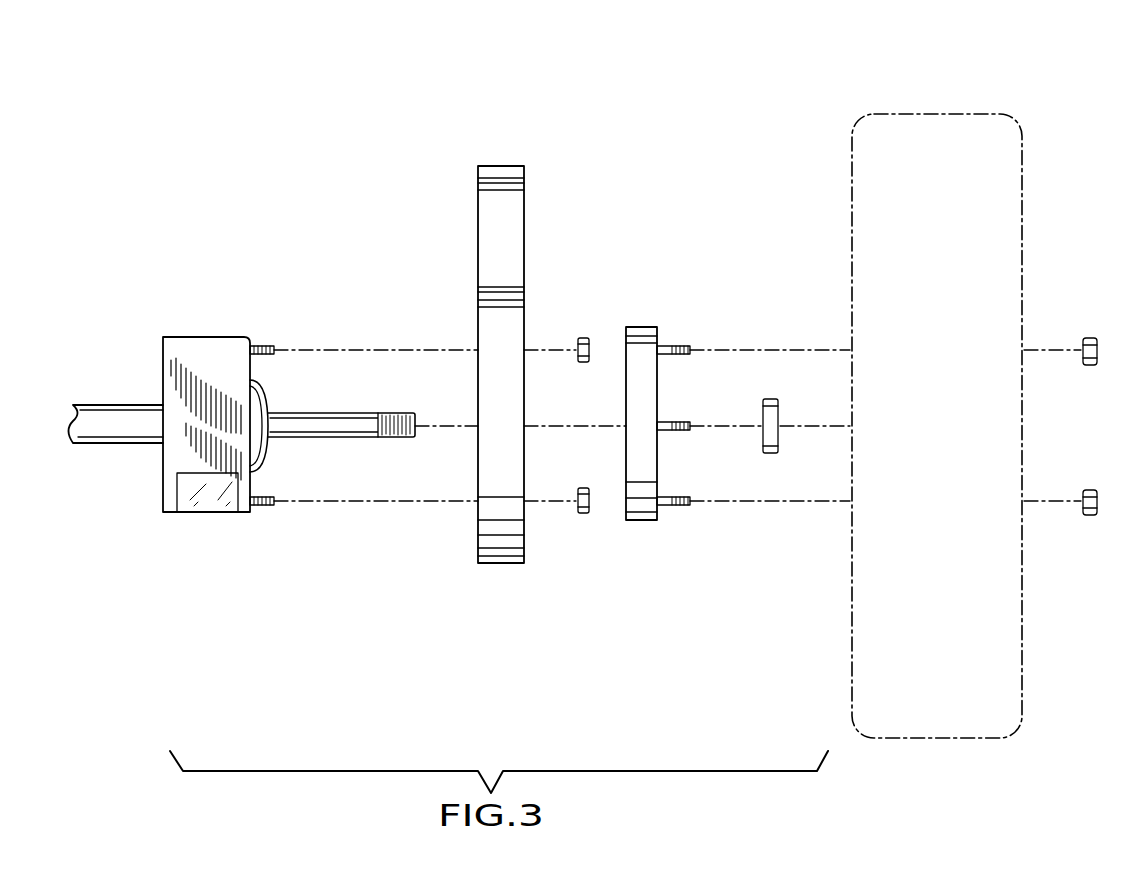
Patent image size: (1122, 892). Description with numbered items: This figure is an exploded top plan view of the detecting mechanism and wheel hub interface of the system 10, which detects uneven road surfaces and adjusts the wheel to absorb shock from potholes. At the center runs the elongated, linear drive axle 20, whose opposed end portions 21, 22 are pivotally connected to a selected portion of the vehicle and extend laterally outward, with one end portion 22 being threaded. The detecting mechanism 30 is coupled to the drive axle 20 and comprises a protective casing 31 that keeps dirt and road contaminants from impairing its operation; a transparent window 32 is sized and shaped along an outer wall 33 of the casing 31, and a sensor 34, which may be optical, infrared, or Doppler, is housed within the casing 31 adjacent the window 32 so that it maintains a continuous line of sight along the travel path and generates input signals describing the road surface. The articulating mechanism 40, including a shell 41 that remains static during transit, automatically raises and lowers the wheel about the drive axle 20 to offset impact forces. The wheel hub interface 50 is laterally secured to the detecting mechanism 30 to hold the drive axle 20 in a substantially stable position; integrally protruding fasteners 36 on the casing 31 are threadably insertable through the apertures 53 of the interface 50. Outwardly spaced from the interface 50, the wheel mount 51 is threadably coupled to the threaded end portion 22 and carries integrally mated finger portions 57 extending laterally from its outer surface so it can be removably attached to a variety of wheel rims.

The system 10 is at (618, 104).
The drive axle 20 is at (370, 437).
The end portion of drive axle 21 is at (100, 405).
The threaded end portion of drive axle 22 is at (395, 413).
The detecting mechanism 30 is at (181, 522).
The protective casing 31 is at (196, 337).
The transparent window 32 is at (223, 512).
The outer wall of casing 33 is at (182, 457).
The sensor 34 is at (213, 512).
The integrally protruding fasteners 36 is at (268, 346).
The articulating mechanism 40 is at (275, 393).
The shell 41 is at (262, 455).
The wheel hub interface 50 is at (478, 230).
The wheel mount 51 is at (636, 327).
The apertures 53 is at (524, 350).
The finger portions 57 is at (680, 494).